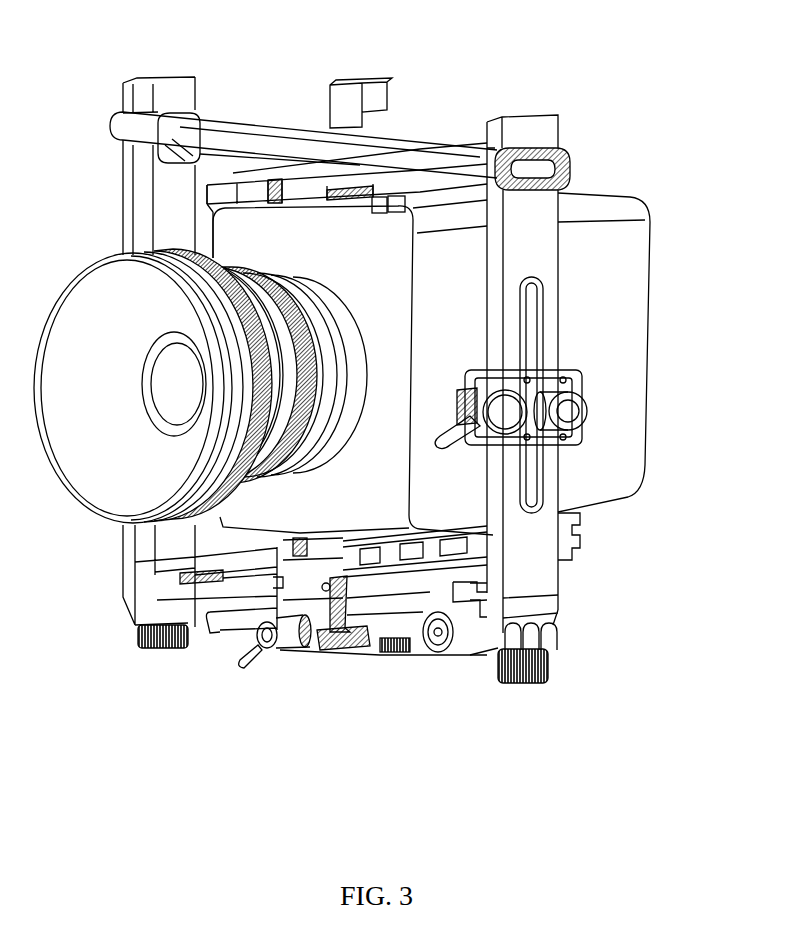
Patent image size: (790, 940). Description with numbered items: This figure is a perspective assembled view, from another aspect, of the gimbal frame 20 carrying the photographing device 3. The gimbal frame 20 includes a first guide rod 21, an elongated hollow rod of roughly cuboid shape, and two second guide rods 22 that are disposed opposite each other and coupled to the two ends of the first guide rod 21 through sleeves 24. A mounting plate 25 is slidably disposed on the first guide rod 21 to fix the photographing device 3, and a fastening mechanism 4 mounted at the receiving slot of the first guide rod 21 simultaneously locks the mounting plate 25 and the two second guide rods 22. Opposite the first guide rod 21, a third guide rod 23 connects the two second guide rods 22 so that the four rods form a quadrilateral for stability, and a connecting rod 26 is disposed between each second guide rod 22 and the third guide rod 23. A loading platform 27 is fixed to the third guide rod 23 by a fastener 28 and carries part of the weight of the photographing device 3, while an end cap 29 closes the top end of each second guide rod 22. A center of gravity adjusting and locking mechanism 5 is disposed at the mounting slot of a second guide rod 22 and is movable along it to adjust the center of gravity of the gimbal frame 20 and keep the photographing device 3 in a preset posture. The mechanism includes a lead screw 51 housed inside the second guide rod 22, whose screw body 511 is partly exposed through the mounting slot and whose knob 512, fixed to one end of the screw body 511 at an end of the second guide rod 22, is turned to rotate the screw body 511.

The photographing device 3 is at (597, 213).
The fastening mechanism 4 is at (344, 104).
The center of gravity adjusting and locking mechanism 5 is at (552, 406).
The gimbal frame 20 is at (352, 670).
The first guide rod 21 is at (212, 258).
The second guide rod 22 is at (598, 374).
The third guide rod 23 is at (200, 635).
The sleeve 24 is at (115, 127).
The mounting plate 25 is at (378, 188).
The connecting rod 26 is at (120, 606).
The loading platform 27 is at (418, 548).
The fastener 28 is at (285, 640).
The end cap 29 is at (157, 79).
The lead screw 51 is at (592, 598).
The screw body 511 is at (547, 483).
The knob 512 is at (553, 663).